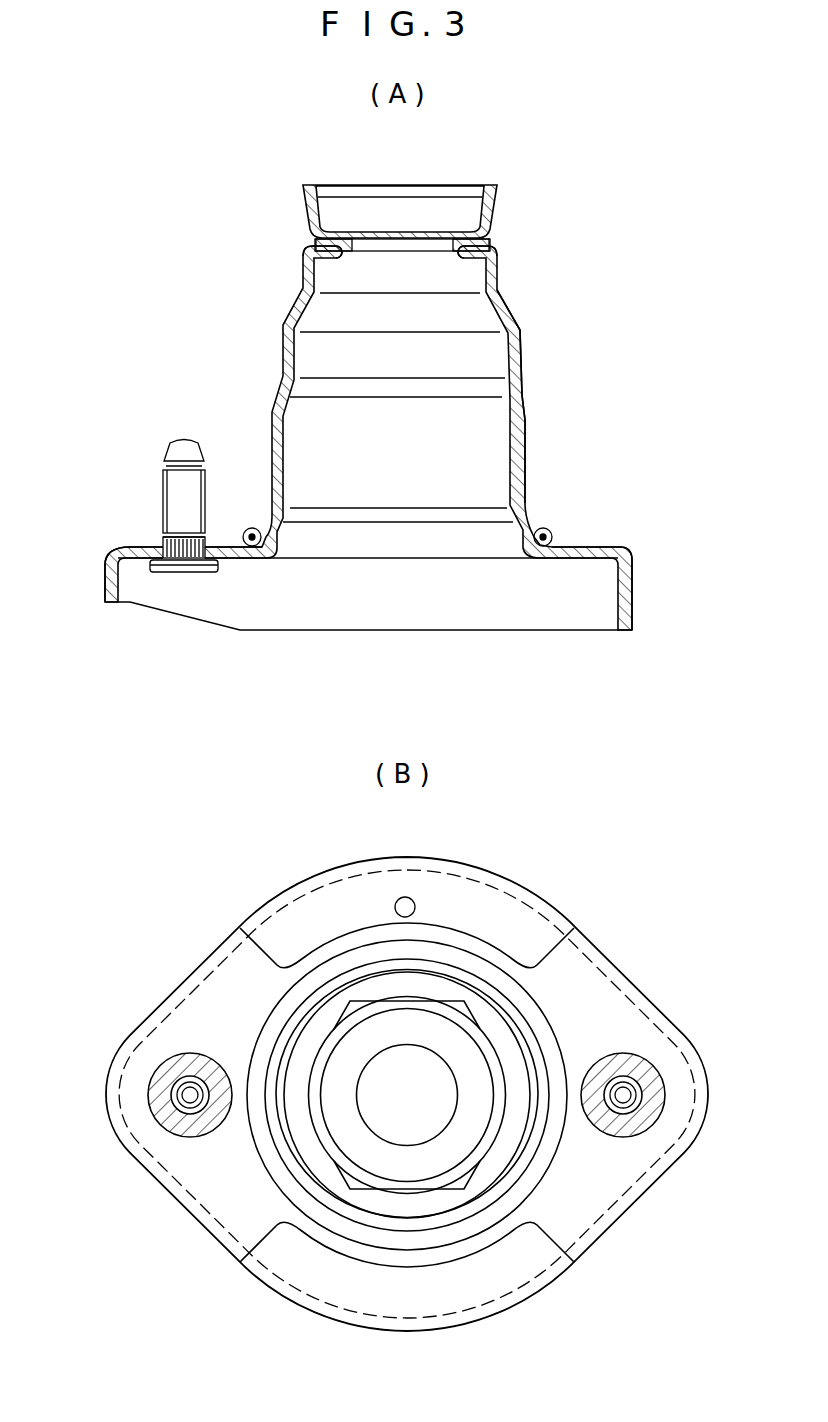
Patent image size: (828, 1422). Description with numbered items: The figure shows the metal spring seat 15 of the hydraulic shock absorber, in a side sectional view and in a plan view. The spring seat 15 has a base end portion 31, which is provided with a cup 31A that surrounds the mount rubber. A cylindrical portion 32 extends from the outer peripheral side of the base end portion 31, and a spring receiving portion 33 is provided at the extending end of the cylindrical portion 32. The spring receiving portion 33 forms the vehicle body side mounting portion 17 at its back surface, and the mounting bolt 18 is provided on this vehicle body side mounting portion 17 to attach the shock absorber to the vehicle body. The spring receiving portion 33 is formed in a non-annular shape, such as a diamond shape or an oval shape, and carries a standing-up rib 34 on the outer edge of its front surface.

The spring seat 15 is at (278, 379).
The vehicle body side mounting portion 17 is at (143, 545).
The mounting bolt 18 is at (172, 483).
The base end portion 31 is at (302, 264).
The cup 31A is at (305, 204).
The cylindrical portion 32 is at (527, 373).
The spring receiving portion 33 is at (590, 547).
The standing-up rib 34 is at (629, 603).